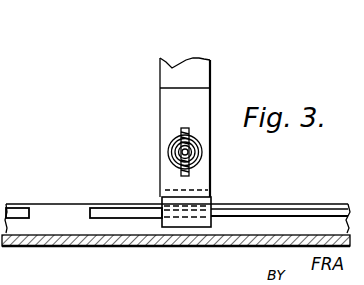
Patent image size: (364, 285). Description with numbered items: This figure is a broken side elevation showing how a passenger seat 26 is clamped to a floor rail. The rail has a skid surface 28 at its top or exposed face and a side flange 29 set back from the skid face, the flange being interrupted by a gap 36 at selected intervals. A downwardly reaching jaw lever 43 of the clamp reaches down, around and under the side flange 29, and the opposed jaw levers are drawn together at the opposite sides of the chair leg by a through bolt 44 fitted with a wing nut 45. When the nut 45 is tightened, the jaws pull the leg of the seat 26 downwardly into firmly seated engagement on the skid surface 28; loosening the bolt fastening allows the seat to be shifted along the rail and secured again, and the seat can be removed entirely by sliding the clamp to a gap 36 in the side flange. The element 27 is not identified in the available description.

The passenger seat 26 is at (200, 70).
The base 27 is at (32, 227).
The skid surface 28 is at (31, 203).
The side flange 29 is at (112, 210).
The gap 36 is at (58, 214).
The jaw lever 43 is at (183, 196).
The through bolt 44 is at (190, 153).
The wing nut 45 is at (185, 129).